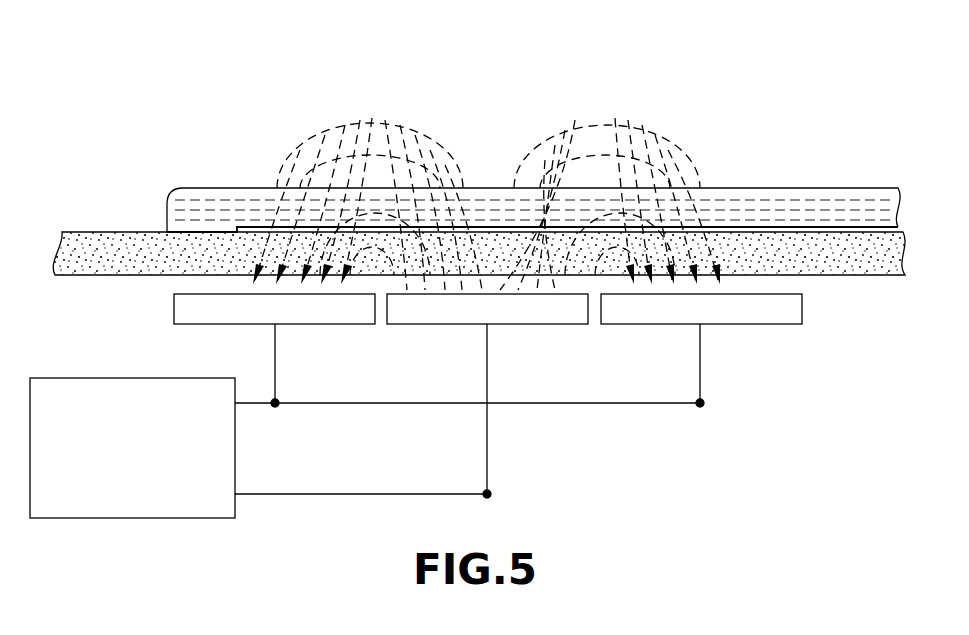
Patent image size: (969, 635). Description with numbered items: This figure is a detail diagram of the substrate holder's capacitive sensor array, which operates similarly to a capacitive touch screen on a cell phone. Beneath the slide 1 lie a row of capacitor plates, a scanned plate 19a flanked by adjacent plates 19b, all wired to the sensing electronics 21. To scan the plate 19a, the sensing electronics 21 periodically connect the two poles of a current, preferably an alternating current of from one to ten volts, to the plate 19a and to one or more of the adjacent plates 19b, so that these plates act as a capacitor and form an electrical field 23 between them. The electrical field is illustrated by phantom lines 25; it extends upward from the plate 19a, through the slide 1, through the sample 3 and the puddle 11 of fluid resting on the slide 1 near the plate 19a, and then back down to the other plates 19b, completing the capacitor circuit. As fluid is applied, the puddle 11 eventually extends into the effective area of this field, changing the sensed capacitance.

The slide 1 is at (858, 258).
The sample 3 is at (792, 232).
The puddle 11 is at (747, 202).
The plate 19a is at (541, 312).
The adjacent plates 19b is at (188, 310).
The sensing electronics 21 is at (149, 465).
The electrical field 23 is at (666, 124).
The phantom lines 25 is at (368, 190).